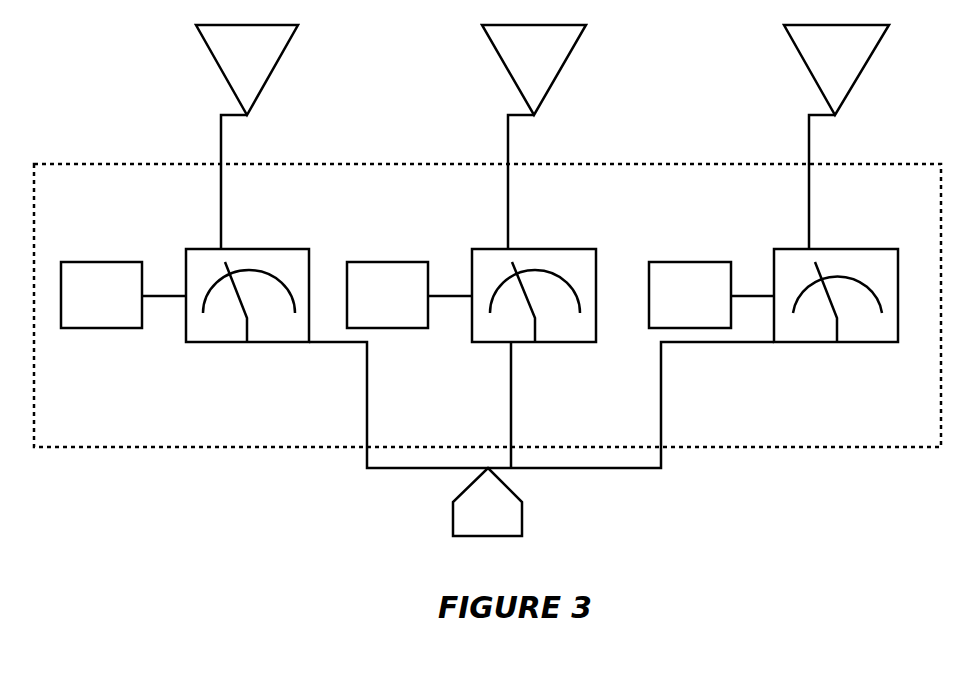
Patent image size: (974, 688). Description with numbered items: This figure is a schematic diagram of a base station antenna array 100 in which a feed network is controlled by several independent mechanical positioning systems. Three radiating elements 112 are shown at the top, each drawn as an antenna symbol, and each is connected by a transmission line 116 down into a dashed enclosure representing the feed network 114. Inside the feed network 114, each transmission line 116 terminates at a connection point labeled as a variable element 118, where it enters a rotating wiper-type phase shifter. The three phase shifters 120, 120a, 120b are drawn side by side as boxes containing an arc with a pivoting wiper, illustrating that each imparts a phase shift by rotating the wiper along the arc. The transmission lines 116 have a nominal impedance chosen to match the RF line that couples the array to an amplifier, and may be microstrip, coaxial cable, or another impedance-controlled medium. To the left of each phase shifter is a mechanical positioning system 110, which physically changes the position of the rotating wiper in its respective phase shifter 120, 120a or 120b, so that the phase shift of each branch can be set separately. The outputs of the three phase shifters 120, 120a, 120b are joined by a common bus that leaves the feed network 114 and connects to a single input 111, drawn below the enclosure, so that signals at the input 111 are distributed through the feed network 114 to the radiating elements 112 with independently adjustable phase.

The base station antenna array 100 is at (155, 105).
The mechanical positioning system 110 is at (118, 306).
The input 111 is at (522, 520).
The radiating element 112 is at (270, 68).
The feed network 114 is at (670, 163).
The transmission line 116 is at (247, 215).
The variable element 118 is at (204, 248).
The rotating wiper-type phase shifter 120 is at (287, 336).
The second rotating wiper-type phase shifter 120a is at (587, 336).
The third rotating wiper-type phase shifter 120b is at (888, 336).